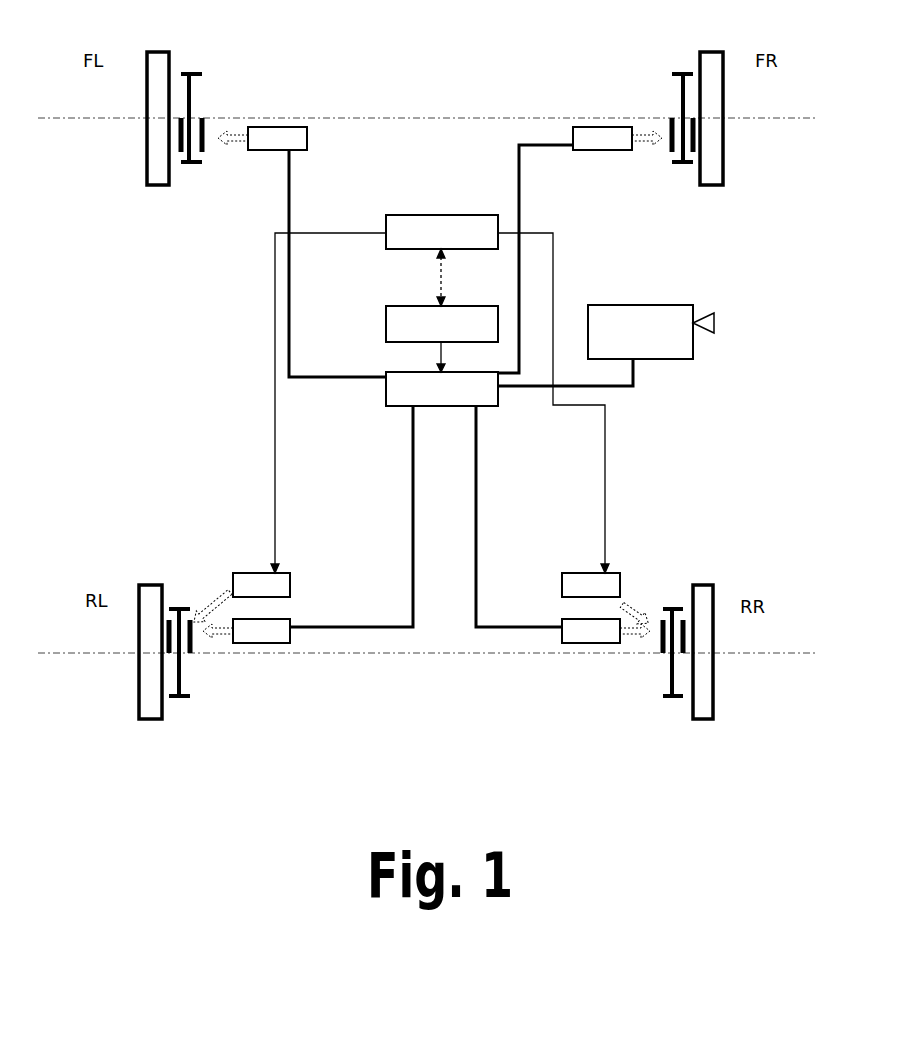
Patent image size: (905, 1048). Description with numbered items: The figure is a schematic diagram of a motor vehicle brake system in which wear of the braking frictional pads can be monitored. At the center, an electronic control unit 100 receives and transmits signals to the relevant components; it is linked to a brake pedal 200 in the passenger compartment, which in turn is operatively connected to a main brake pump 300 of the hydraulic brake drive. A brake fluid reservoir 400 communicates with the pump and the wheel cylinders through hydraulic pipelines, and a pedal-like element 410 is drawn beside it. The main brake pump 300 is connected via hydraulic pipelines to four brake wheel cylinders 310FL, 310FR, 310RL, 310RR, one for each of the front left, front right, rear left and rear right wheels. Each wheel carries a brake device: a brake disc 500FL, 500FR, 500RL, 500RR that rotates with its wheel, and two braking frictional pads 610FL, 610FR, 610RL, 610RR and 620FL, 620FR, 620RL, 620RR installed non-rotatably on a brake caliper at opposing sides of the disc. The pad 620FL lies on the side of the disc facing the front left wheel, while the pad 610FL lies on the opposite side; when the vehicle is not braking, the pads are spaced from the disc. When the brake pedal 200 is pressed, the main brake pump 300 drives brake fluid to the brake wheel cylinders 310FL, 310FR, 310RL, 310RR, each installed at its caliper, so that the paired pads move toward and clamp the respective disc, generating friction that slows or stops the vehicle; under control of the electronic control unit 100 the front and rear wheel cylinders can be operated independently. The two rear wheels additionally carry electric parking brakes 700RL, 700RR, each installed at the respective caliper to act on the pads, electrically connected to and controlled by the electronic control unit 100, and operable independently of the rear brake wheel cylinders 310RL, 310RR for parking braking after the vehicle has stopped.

The electronic control unit 100 is at (440, 394).
The brake pedal 200 is at (442, 310).
The main brake pump 300 is at (426, 499).
The brake fluid reservoir 400 is at (595, 345).
The brake pedal 410 is at (722, 324).
The brake wheel cylinder 310FL is at (302, 252).
The brake wheel cylinder 310FR is at (580, 250).
The brake wheel cylinder 310RL is at (246, 631).
The brake wheel cylinder 310RR is at (606, 631).
The electric parking brake 700RL is at (239, 600).
The electric parking brake 700RR is at (607, 601).
The brake disc 500FL is at (193, 70).
The brake disc 500FR is at (678, 71).
The brake disc 500RL is at (178, 700).
The brake disc 500RR is at (672, 700).
The braking frictional pad 610FL is at (203, 153).
The braking frictional pad 610FR is at (670, 151).
The braking frictional pad 610RL is at (192, 632).
The braking frictional pad 610RR is at (661, 633).
The braking frictional pad 620FL is at (180, 143).
The braking frictional pad 620FR is at (694, 153).
The braking frictional pad 620RL is at (168, 632).
The braking frictional pad 620RR is at (685, 635).